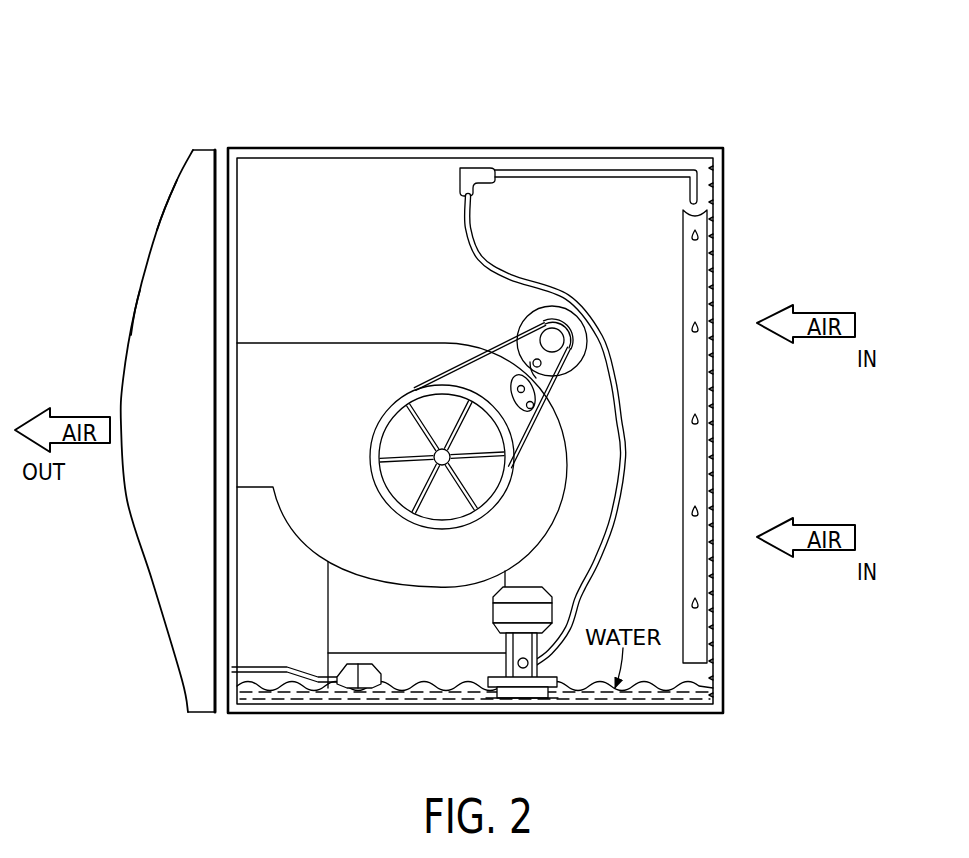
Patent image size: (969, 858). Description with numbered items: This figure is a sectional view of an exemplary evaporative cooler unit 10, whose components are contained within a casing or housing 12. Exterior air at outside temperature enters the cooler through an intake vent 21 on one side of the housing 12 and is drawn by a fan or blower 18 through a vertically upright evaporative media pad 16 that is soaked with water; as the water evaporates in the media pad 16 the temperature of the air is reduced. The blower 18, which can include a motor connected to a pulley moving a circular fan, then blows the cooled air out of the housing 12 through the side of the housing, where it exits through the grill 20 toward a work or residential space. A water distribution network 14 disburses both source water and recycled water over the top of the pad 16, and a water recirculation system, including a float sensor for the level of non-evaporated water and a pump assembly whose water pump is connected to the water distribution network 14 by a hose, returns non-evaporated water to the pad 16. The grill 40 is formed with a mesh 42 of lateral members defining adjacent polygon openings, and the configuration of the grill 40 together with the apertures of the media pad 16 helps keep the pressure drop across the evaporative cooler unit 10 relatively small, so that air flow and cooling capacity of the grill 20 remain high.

The evaporative cooler unit 10 is at (712, 70).
The housing 12 is at (343, 150).
The water distribution network 14 is at (463, 167).
The evaporative media pad 16 is at (698, 378).
The blower 18 is at (363, 342).
The grill 20 is at (163, 128).
The intake vent 21 is at (720, 455).
The grill 40 is at (155, 230).
The mesh 42 is at (135, 297).